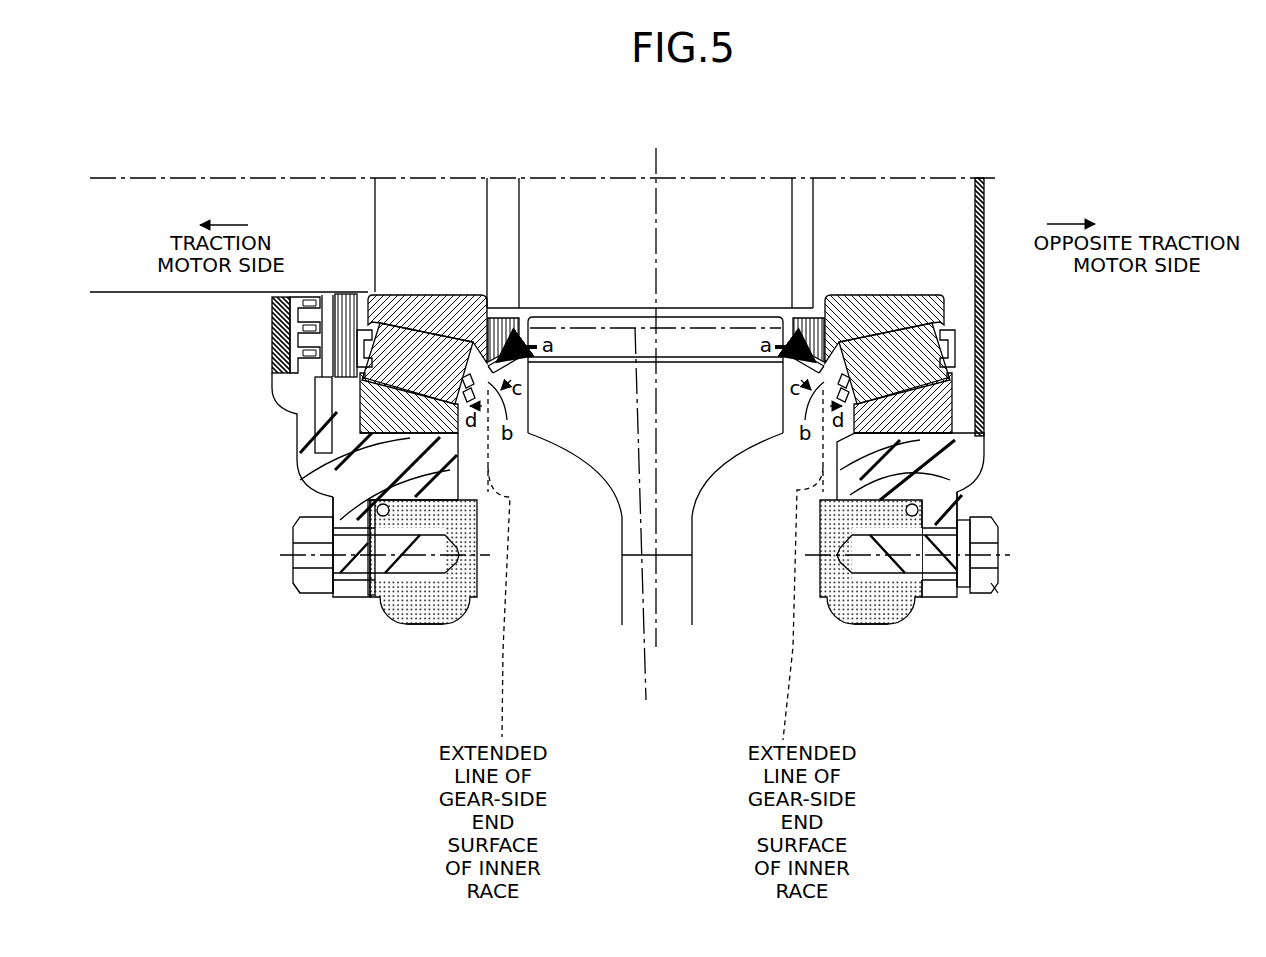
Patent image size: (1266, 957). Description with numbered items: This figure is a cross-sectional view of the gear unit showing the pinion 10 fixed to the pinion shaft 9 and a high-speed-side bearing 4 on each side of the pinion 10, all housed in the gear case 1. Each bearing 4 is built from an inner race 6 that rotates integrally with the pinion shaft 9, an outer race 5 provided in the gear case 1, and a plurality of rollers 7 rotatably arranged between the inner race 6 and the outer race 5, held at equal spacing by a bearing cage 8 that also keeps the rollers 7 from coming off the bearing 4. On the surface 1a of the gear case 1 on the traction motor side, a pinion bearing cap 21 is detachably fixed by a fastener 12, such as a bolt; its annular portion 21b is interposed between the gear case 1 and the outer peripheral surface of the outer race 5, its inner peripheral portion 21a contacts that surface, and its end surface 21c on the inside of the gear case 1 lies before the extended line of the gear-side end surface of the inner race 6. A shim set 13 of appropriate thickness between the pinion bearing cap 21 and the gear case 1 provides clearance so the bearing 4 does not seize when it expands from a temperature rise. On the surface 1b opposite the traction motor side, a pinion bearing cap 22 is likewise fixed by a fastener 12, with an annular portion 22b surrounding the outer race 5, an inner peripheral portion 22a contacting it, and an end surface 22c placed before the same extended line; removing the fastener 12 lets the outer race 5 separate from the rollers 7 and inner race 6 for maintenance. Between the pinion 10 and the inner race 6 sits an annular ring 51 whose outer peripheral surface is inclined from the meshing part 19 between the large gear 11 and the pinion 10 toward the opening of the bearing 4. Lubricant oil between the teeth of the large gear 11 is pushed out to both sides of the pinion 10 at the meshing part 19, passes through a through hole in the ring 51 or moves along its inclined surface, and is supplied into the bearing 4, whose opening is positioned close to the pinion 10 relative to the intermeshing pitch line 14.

The gear case 1 is at (458, 592).
The surface on the traction motor side 1a is at (417, 602).
The surface opposite to the traction motor side 1b is at (880, 602).
The bearing 4 is at (350, 380).
The outer race 5 is at (370, 412).
The inner race 6 is at (408, 290).
The rollers 7 is at (380, 373).
The bearing cage 8 is at (363, 343).
The pinion shaft 9 is at (136, 197).
The pinion 10 is at (590, 208).
The large gear 11 is at (613, 463).
The fastener 12 is at (305, 595).
The shim set 13 is at (372, 600).
The intermeshing pitch line 14 is at (646, 563).
The meshing part 19 is at (699, 388).
The pinion bearing cap 21 is at (403, 473).
The inner peripheral portion 21a is at (452, 483).
The annular portion 21b is at (335, 528).
The end surface 21c is at (335, 563).
The pinion bearing cap 22 is at (876, 470).
The inner peripheral portion 22a is at (956, 452).
The annular portion 22b is at (999, 533).
The end surface 22c is at (1003, 567).
The ring 51 is at (500, 232).